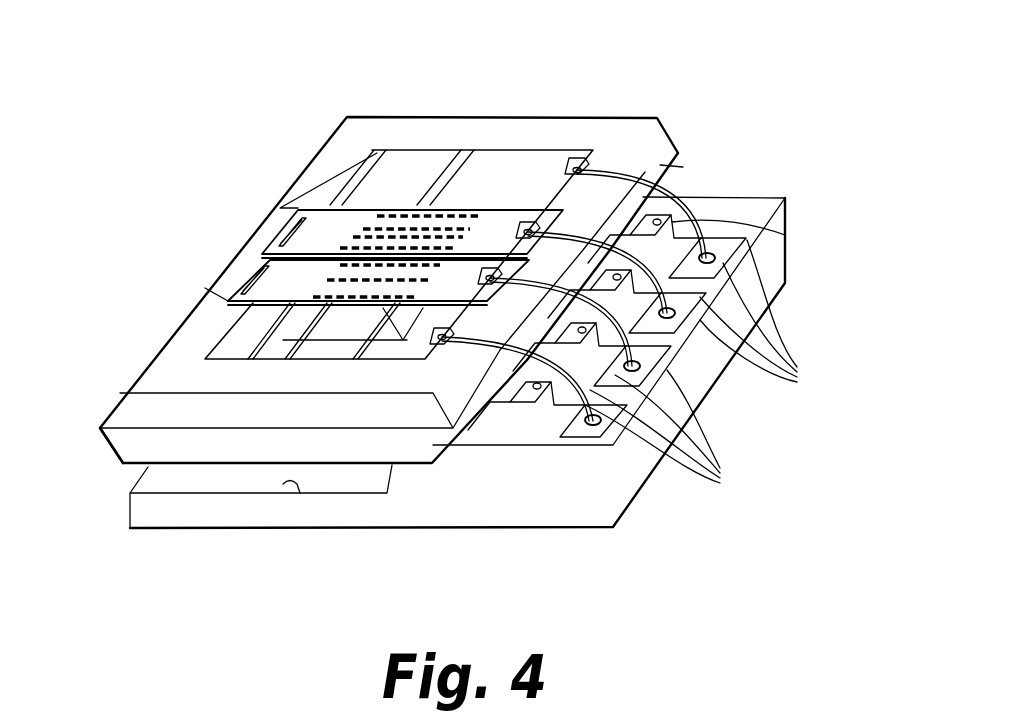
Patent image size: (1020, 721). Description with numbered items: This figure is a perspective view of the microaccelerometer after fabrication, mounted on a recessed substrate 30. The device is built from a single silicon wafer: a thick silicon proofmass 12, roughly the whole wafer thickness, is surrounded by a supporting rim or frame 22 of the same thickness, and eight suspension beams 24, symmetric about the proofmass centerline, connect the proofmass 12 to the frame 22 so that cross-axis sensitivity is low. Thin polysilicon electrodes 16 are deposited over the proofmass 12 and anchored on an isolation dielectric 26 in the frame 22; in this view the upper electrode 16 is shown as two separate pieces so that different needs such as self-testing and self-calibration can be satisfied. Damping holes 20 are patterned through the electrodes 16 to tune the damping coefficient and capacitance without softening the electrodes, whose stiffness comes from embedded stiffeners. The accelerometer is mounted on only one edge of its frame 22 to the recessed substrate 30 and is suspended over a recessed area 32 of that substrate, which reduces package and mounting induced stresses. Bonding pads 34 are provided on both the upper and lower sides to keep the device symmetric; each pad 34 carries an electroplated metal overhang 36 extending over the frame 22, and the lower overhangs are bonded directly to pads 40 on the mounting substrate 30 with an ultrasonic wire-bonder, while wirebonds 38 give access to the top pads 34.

The proofmass 12 is at (450, 205).
The polysilicon electrodes 16 is at (270, 244).
The damping holes 20 is at (360, 277).
The frame 22 is at (512, 133).
The suspension beams 24 is at (300, 205).
The isolation dielectric 26 is at (670, 155).
The recessed substrate 30 is at (795, 232).
The recessed area 32 is at (283, 484).
The bonding pads 34 is at (586, 158).
The electroplated metal overhang 36 is at (668, 200).
The wirebonds 38 is at (672, 222).
The pads 40 is at (707, 357).